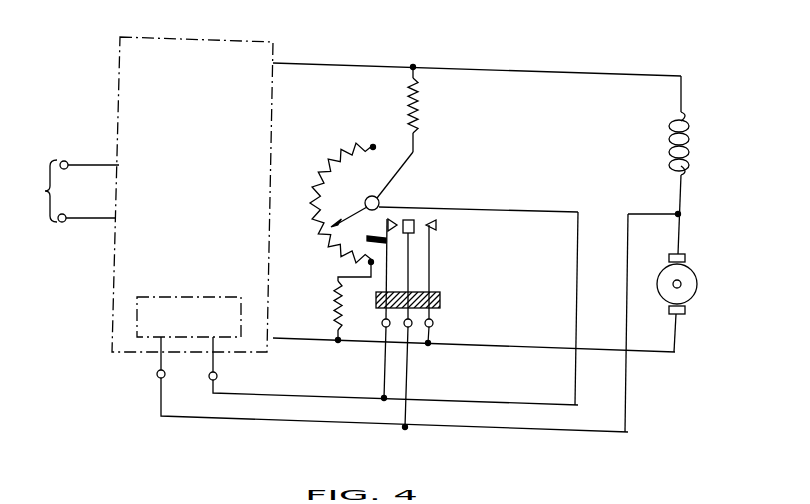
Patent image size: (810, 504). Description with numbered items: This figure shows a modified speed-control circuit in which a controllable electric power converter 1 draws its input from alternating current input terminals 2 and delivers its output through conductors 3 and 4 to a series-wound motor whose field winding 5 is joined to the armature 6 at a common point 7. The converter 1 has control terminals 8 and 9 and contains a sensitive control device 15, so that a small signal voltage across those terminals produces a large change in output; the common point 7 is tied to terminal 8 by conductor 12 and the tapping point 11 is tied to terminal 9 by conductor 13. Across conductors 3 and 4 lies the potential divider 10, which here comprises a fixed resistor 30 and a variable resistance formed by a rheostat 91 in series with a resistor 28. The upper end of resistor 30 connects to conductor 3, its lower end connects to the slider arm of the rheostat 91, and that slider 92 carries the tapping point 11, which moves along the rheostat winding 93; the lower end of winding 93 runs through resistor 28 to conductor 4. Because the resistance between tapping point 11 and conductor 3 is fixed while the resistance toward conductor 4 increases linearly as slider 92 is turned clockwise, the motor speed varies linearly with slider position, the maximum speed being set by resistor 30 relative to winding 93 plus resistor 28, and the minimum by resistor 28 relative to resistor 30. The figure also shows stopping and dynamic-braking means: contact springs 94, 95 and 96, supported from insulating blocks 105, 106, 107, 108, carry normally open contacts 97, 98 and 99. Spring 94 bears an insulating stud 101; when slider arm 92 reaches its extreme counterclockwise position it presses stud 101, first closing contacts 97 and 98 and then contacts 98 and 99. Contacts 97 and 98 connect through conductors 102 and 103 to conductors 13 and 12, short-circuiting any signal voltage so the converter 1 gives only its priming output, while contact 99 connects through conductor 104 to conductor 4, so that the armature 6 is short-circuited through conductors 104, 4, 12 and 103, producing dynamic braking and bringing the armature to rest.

The controllable electric power converter 1 is at (218, 42).
The alternating current input terminals 2 is at (75, 191).
The conductor 3 is at (378, 63).
The conductor 4 is at (358, 343).
The field winding 5 is at (692, 145).
The armature 6 is at (698, 284).
The common point 7 is at (681, 214).
The control terminal 8 is at (157, 374).
The control terminal 9 is at (217, 377).
The potential divider 10 is at (340, 144).
The tapping point 11 is at (333, 221).
The conductor 12 is at (282, 422).
The conductor 13 is at (326, 397).
The sensitive control device 15 is at (205, 297).
The resistor 28 is at (335, 306).
The fixed resistor 30 is at (411, 112).
The rheostat 91 is at (321, 225).
The rheostat slider 92 is at (366, 198).
The rheostat winding 93 is at (348, 154).
The contact spring 94 is at (385, 276).
The contact spring 95 is at (411, 251).
The contact spring 96 is at (431, 273).
The contact 97 is at (389, 217).
The contact 98 is at (414, 219).
The contact 99 is at (437, 225).
The insulating stud 101 is at (367, 240).
The conductor 102 is at (384, 379).
The conductor 103 is at (407, 379).
The conductor 104 is at (433, 339).
The insulating block 105 is at (380, 300).
The insulating block 106 is at (388, 309).
The insulating block 107 is at (433, 316).
The insulating block 108 is at (442, 303).